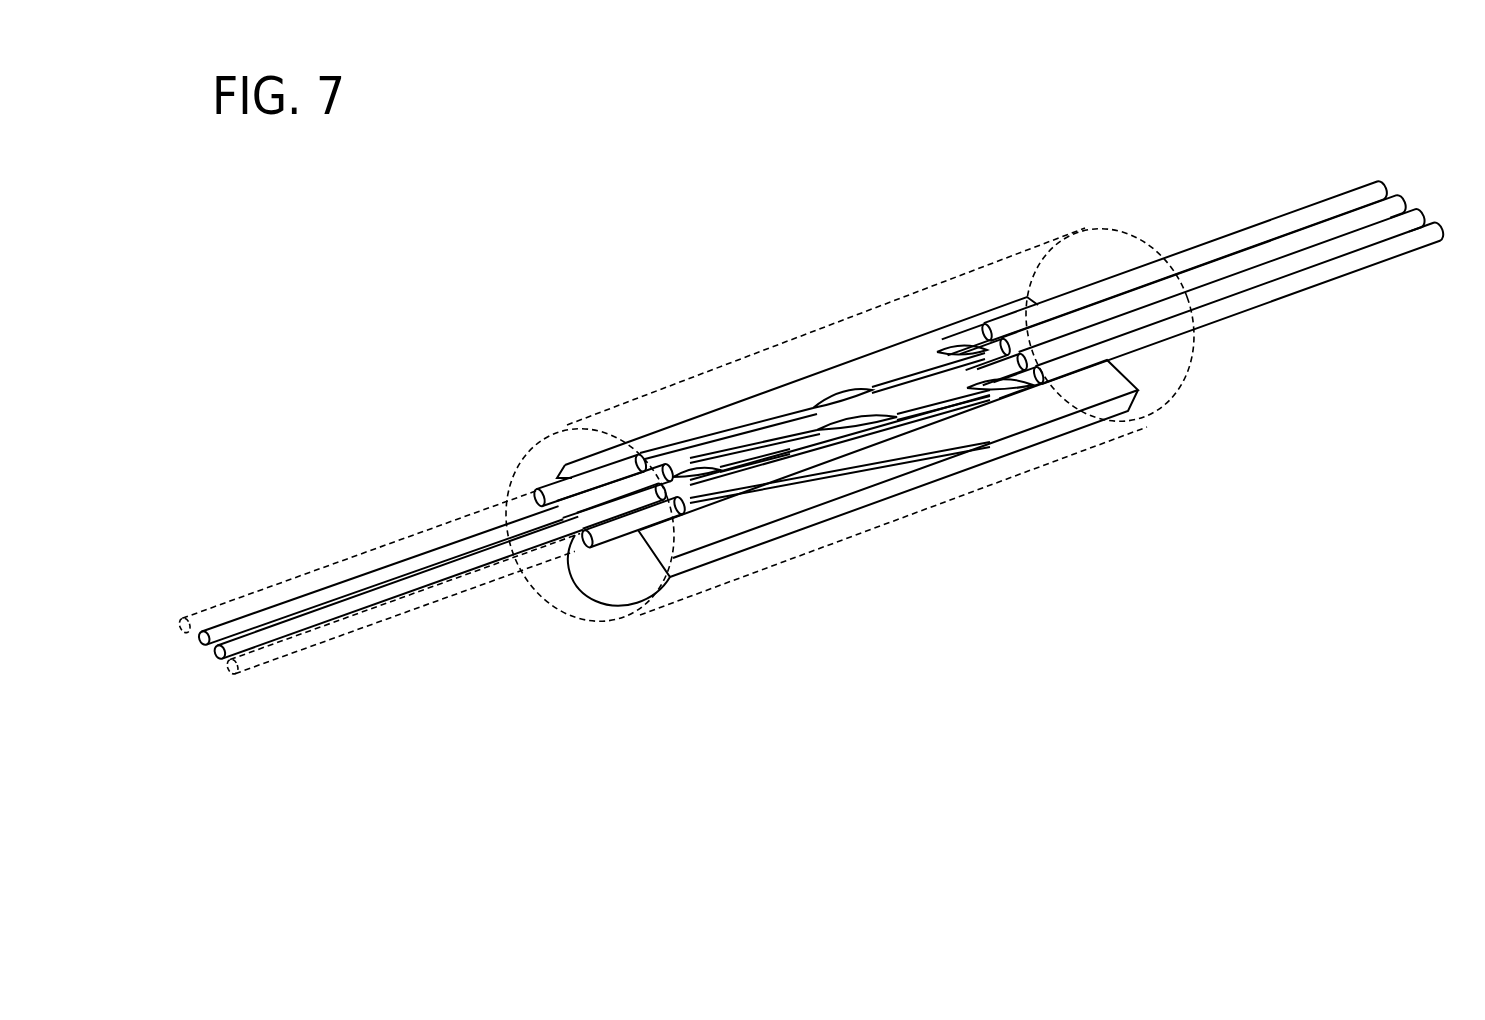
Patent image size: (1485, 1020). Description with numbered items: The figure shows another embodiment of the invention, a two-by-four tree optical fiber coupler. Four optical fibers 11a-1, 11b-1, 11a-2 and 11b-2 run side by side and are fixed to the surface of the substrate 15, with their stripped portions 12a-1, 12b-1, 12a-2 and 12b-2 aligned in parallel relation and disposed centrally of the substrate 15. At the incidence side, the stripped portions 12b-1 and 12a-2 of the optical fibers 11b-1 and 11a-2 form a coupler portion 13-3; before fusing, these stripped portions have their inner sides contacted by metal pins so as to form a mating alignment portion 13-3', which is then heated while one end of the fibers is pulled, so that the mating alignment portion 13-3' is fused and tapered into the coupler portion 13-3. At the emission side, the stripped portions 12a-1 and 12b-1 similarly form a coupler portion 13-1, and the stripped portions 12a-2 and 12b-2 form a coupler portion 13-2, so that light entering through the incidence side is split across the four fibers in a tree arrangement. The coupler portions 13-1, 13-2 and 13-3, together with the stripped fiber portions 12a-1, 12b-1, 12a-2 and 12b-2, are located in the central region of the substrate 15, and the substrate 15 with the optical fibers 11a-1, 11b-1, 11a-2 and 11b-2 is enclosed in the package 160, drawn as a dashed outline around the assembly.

The optical fiber 11a-1 is at (258, 582).
The optical fiber 11b-1 is at (318, 603).
The optical fiber 11a-2 is at (373, 598).
The optical fiber 11b-2 is at (455, 590).
The stripped portion 12a-1 is at (657, 482).
The stripped portion 12b-1 is at (680, 493).
The stripped portion 12a-2 is at (690, 497).
The stripped portion 12b-2 is at (750, 488).
The coupler portion 13-1 is at (883, 363).
The coupler portion 13-2 is at (943, 403).
The coupler portion 13-3 is at (831, 379).
The mating alignment portion 13-3' is at (836, 366).
The substrate 15 is at (1143, 407).
The package 160 is at (510, 470).